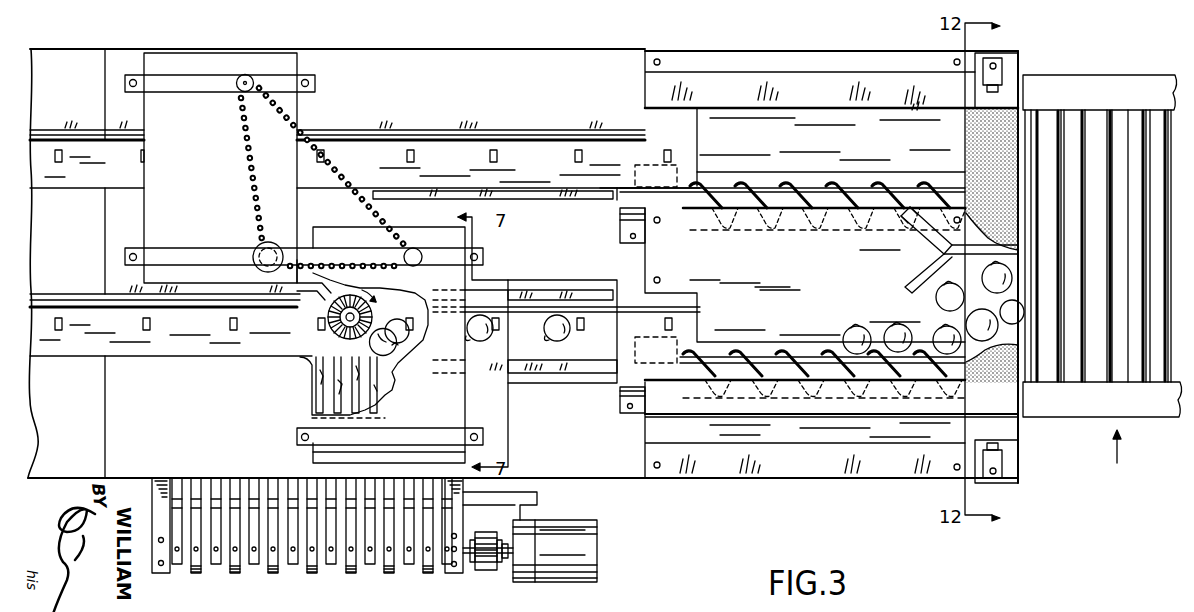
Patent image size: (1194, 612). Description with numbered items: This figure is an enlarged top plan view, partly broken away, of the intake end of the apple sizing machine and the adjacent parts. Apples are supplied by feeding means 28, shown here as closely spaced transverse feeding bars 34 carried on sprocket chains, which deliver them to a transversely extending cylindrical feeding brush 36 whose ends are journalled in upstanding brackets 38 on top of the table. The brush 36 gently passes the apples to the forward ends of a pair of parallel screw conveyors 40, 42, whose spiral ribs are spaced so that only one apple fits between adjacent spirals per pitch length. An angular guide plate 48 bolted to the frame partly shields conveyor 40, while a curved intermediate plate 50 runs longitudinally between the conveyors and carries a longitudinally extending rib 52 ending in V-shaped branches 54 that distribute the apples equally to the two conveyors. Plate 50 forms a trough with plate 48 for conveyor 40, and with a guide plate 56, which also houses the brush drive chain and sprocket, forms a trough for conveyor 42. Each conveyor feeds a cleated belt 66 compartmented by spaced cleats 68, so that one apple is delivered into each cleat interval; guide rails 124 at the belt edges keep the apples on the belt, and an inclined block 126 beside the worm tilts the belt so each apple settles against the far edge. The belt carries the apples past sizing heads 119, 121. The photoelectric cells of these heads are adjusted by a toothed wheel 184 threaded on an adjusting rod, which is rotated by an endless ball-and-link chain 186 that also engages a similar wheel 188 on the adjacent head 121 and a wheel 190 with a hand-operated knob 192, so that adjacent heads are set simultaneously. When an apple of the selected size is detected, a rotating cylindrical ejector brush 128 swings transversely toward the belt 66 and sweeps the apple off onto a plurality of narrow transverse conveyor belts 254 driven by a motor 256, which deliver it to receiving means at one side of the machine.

The feeding means 28 is at (1118, 458).
The feeding bars 34 is at (1072, 381).
The feeding brush 36 is at (1023, 113).
The upstanding brackets 38 is at (1005, 66).
The screw conveyor 40 is at (827, 374).
The screw conveyor 42 is at (814, 200).
The angular guide plate 48 is at (797, 435).
The intermediate plate 50 is at (792, 310).
The longitudinally extending rib 52 is at (932, 268).
The V-shaped branches 54 is at (906, 246).
The guide plate 56 is at (831, 111).
The cleated belt 66 is at (593, 350).
The cleats 68 is at (578, 316).
The sizing head 119 is at (330, 453).
The sizing head 121 is at (254, 64).
The guide rails 124 is at (189, 293).
The inclined block 126 is at (663, 346).
The ejector brush 128 is at (327, 316).
The toothed wheel 184 is at (410, 255).
The endless chain 186 is at (242, 160).
The wheel 188 is at (234, 88).
The wheel 190 is at (255, 248).
The knob 192 is at (259, 270).
The narrow conveyor belts 254 is at (336, 372).
The motor 256 is at (574, 574).